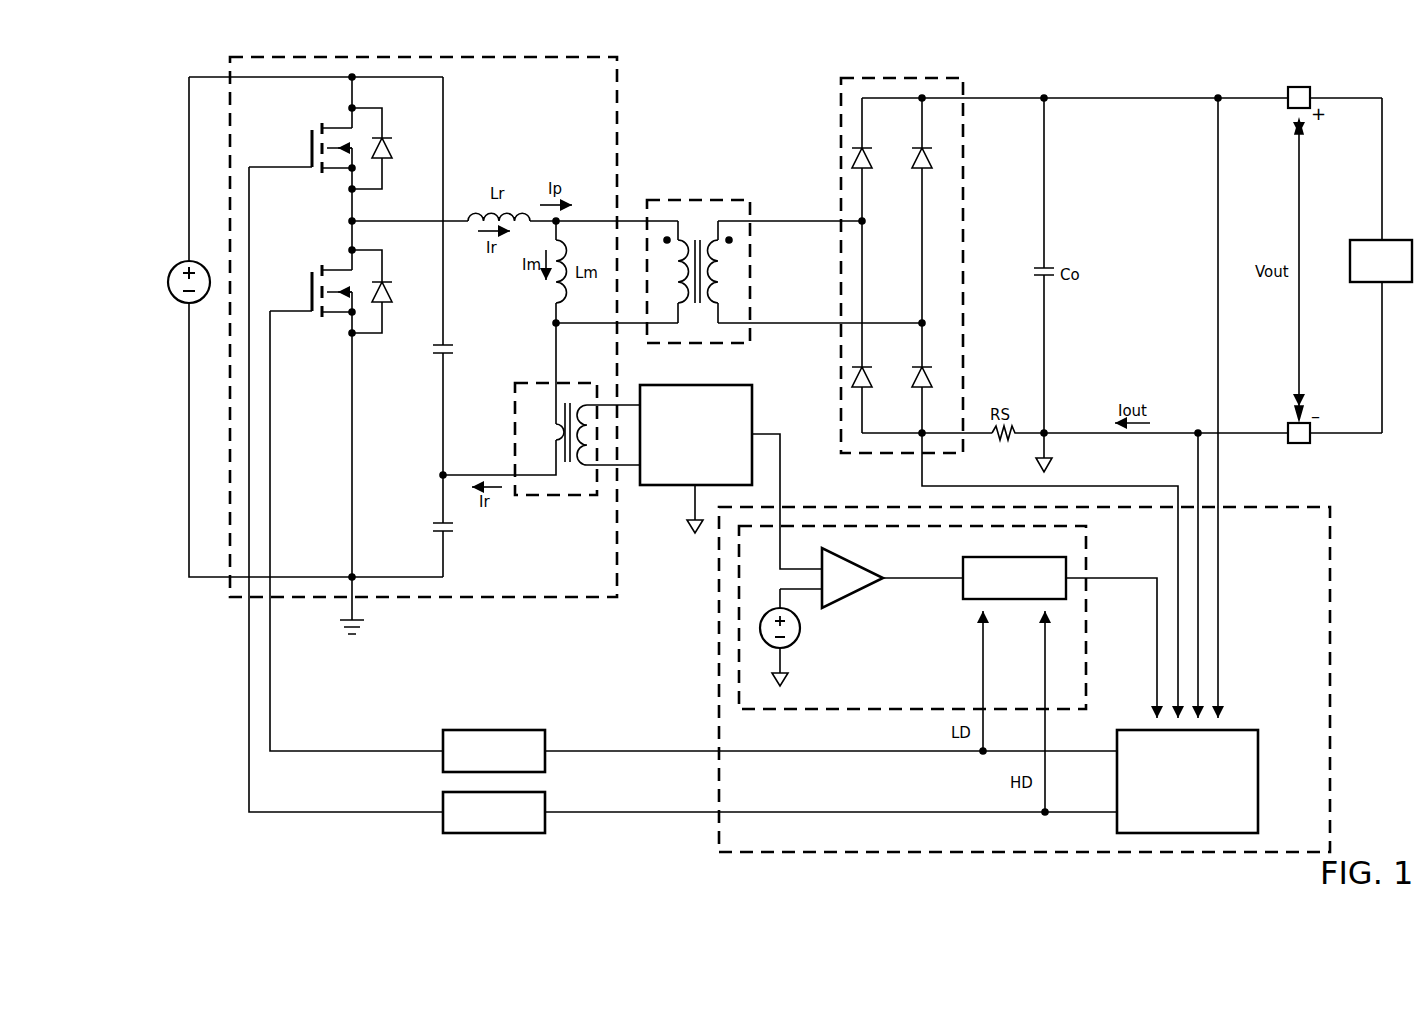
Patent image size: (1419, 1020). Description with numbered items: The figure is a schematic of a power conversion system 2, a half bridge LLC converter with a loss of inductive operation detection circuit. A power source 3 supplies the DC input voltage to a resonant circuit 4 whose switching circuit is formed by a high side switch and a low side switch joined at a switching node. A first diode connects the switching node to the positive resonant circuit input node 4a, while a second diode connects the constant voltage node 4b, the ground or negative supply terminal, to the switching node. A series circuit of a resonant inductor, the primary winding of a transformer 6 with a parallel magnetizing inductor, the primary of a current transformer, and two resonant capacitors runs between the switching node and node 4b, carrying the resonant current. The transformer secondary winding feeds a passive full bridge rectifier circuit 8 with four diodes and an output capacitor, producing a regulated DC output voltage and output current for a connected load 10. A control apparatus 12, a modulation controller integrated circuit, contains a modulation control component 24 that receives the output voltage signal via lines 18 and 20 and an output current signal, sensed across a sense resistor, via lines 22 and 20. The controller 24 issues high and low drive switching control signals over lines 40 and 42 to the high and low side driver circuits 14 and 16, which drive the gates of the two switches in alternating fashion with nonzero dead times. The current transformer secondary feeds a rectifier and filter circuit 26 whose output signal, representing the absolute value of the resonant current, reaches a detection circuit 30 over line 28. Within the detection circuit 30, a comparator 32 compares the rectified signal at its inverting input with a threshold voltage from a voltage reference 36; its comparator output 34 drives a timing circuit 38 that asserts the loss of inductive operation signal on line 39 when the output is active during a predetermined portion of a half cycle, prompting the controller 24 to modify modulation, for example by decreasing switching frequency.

The power conversion system 2 is at (178, 104).
The power source 3 is at (183, 264).
The resonant circuit 4 is at (619, 104).
The positive resonant circuit input node 4a is at (272, 78).
The constant voltage node 4b is at (393, 577).
The transformer 6 is at (697, 198).
The passive full bridge rectifier circuit 8 is at (839, 154).
The load 10 is at (1393, 240).
The control apparatus 12 is at (1332, 752).
The high side driver circuit 14 is at (495, 834).
The low side driver circuit 16 is at (495, 730).
The line 18 is at (1218, 470).
The line 20 is at (1198, 470).
The line 22 is at (922, 470).
The modulation control component 24 is at (1259, 780).
The rectifier and filter circuit 26 is at (683, 485).
The line 28 is at (766, 433).
The detection circuit 30 is at (1090, 554).
The comparator 32 is at (856, 598).
The comparator output 34 is at (920, 579).
The voltage reference 36 is at (793, 650).
The timing circuit 38 is at (1012, 600).
The line 39 is at (1157, 655).
The line 40 is at (630, 813).
The line 42 is at (630, 752).